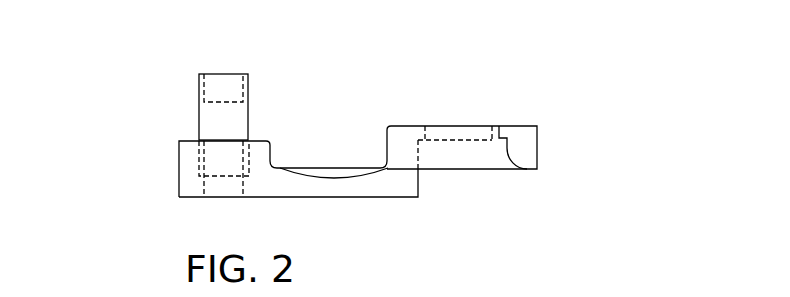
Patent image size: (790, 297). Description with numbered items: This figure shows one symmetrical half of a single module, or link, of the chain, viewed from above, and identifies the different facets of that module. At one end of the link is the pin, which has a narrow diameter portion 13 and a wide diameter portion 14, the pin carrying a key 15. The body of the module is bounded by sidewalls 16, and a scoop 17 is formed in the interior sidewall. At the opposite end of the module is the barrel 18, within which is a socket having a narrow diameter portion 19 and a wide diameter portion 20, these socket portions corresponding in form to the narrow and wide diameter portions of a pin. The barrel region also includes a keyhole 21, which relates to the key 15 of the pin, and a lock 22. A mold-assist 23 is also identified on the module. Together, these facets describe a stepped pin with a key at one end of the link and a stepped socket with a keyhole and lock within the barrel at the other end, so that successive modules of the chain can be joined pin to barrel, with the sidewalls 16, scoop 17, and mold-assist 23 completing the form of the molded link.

The narrow diameter portion of the pin 13 is at (198, 115).
The wide diameter portion of the pin 14 is at (177, 165).
The key 15 is at (203, 88).
The sidewalls 16 is at (398, 198).
The scoop in the interior sidewall 17 is at (346, 168).
The barrel 18 is at (386, 125).
The narrow diameter portion of the socket 19 is at (484, 125).
The wide diameter portion of the socket 20 is at (515, 150).
The keyhole 21 is at (508, 136).
The lock 22 is at (492, 142).
The mold-assist 23 is at (202, 187).